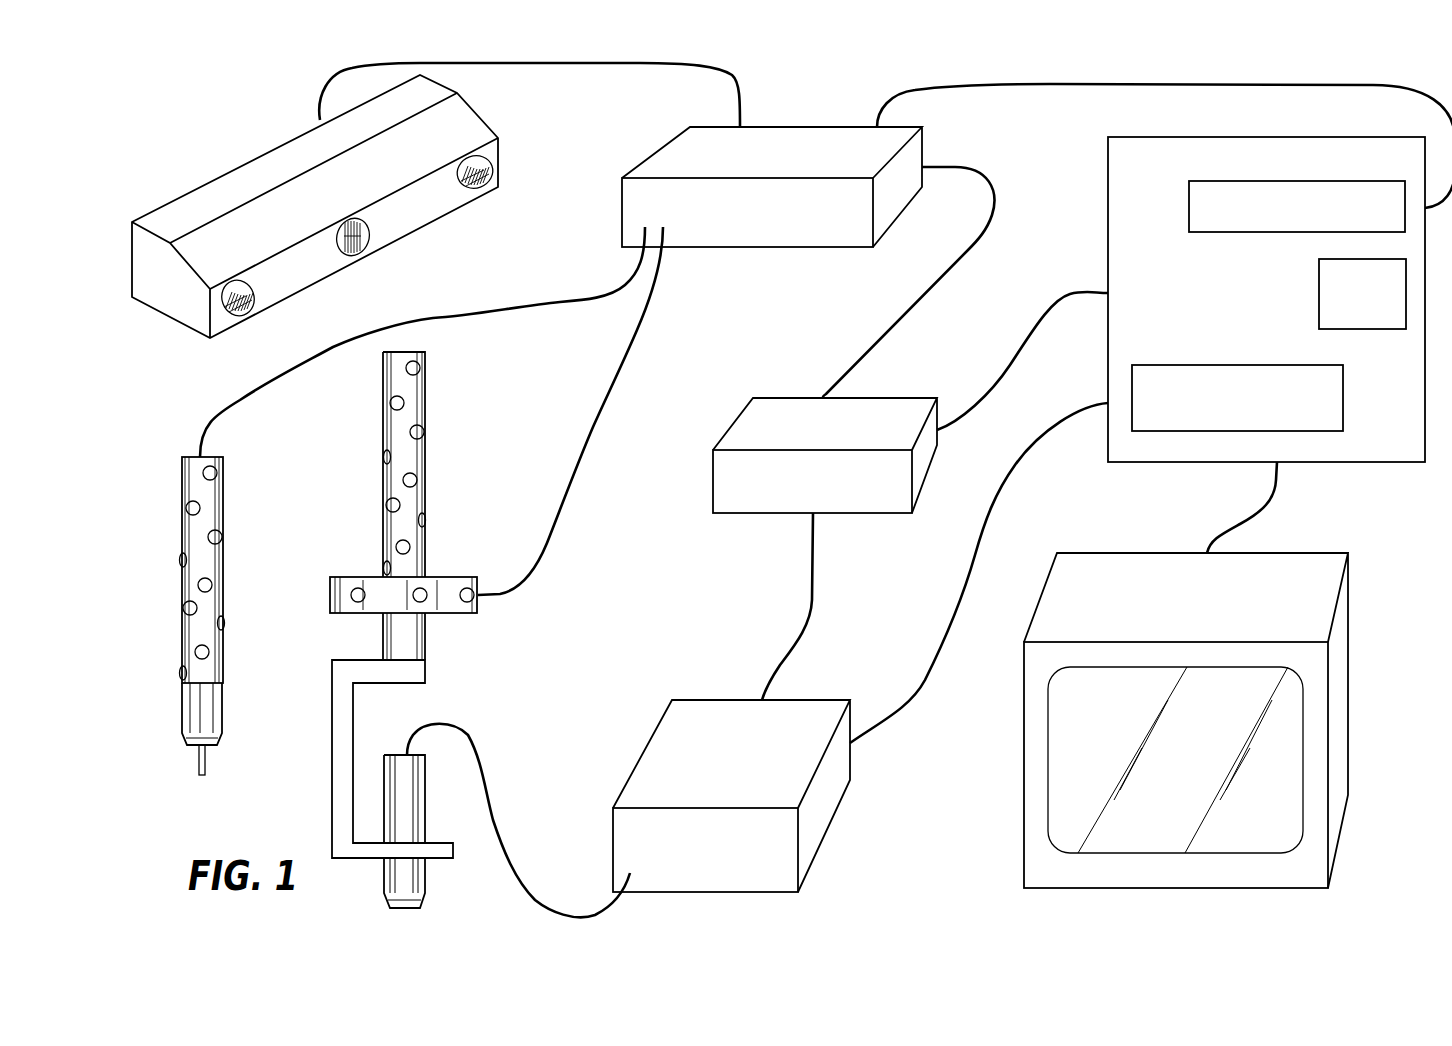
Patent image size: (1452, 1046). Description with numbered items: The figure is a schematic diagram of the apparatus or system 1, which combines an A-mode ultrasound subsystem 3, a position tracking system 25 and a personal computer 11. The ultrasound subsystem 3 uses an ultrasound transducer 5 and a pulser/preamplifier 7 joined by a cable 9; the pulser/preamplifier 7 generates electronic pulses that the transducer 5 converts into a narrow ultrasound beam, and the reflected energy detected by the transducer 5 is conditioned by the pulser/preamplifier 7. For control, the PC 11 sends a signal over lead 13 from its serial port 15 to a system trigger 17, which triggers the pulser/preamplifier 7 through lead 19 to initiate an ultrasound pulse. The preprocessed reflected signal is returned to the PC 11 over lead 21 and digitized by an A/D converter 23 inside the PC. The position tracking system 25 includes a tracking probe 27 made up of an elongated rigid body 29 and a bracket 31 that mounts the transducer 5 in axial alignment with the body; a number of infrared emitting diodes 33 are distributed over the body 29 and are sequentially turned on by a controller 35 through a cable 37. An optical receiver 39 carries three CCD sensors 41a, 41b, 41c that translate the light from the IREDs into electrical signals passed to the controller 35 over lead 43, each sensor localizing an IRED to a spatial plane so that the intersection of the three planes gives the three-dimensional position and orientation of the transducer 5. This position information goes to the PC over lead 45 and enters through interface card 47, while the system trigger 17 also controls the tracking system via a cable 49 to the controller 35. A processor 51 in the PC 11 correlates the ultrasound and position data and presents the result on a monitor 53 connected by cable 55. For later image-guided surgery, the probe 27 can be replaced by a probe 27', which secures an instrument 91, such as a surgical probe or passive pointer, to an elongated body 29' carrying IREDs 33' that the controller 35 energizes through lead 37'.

The apparatus or system 1 is at (786, 319).
The A-mode ultrasound subsystem 3 is at (612, 660).
The ultrasound transducer 5 is at (427, 880).
The pulser/preamplifier 7 is at (813, 827).
The cable 9 is at (490, 798).
The personal computer 11 is at (1243, 319).
The lead 13 is at (1012, 366).
The serial port 15 is at (1108, 293).
The system trigger 17 is at (903, 408).
The lead 19 is at (812, 590).
The lead 21 is at (990, 524).
The analog to digital (A/D) converter 23 is at (1185, 363).
The position tracking system 25 is at (640, 457).
The tracking probe 27 is at (380, 506).
The probe 27' is at (235, 610).
The elongated rigid body 29 is at (375, 506).
The elongated body 29' is at (185, 594).
The bracket 31 is at (330, 715).
The infrared emitting diodes (IREDs) 33 is at (431, 468).
The IREDs 33' is at (226, 573).
The controller 35 is at (886, 209).
The cable 37 is at (588, 411).
The lead 37' is at (422, 342).
The optical receiver 39 is at (340, 210).
The charge coupled device (CCD) sensor 41a is at (238, 310).
The charge coupled device (CCD) sensor 41b is at (365, 240).
The charge coupled device (CCD) sensor 41c is at (477, 182).
The lead 43 is at (604, 78).
The lead 45 is at (1069, 84).
The interface card 47 is at (1360, 180).
The cable 49 is at (942, 283).
The processor 51 is at (1378, 329).
The monitor 53 is at (1128, 578).
The cable 55 is at (1251, 521).
The instrument 91 is at (205, 763).